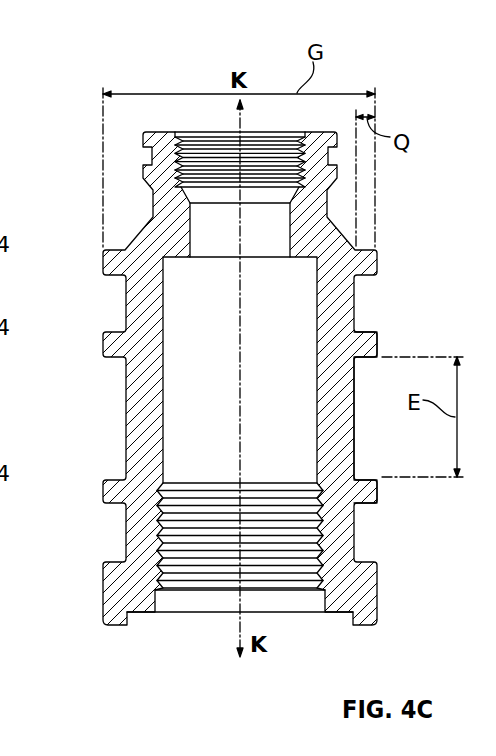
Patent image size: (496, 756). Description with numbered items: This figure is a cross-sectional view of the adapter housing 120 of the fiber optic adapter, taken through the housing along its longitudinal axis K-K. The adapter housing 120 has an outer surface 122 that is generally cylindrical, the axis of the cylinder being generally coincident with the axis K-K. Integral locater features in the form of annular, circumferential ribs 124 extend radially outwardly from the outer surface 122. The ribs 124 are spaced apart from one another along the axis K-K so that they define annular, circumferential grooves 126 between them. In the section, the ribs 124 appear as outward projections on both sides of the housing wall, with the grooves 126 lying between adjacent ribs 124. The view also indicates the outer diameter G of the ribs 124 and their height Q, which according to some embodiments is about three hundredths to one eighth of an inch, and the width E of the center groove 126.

The adapter housing 120 is at (86, 70).
The outer surface 122 is at (133, 415).
The ribs 124 is at (364, 341).
The grooves 126 is at (370, 427).